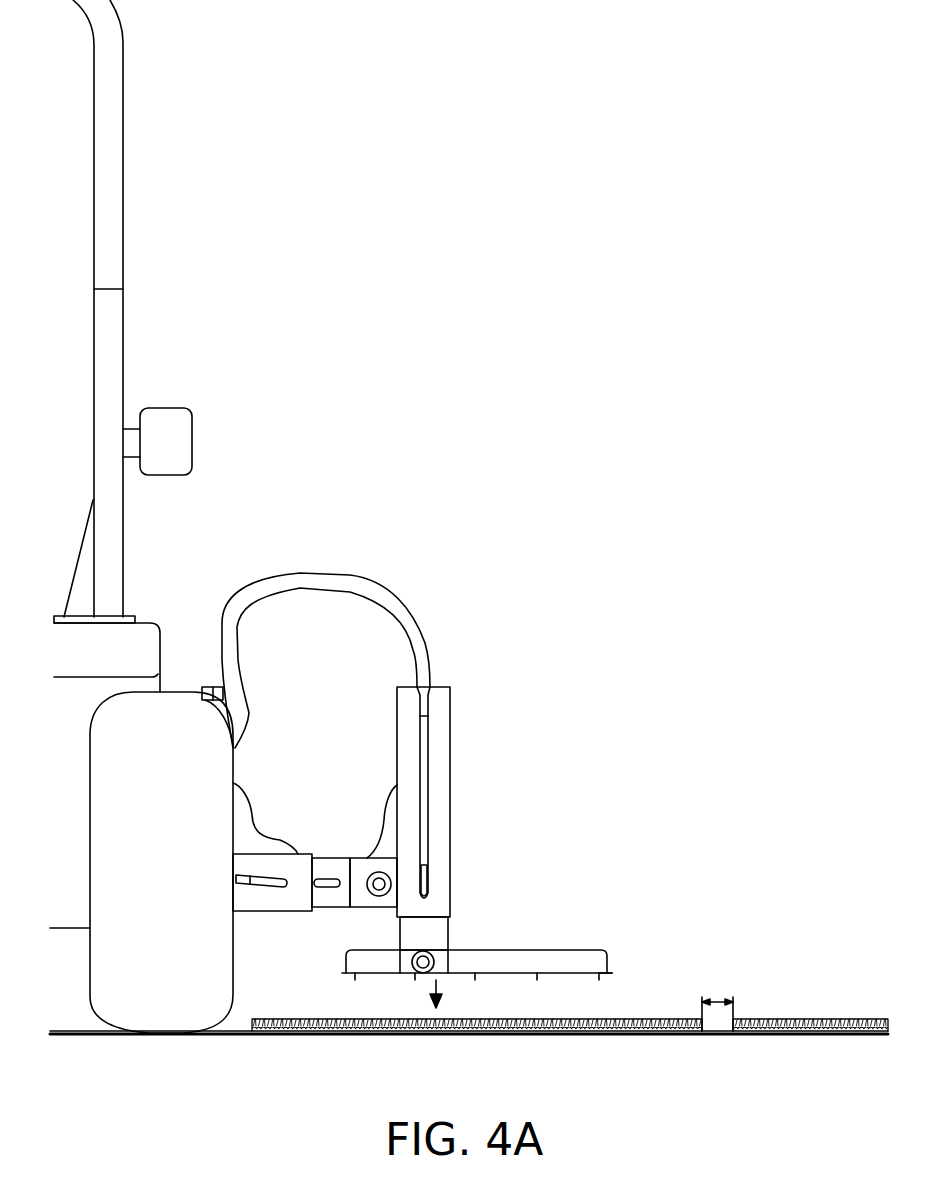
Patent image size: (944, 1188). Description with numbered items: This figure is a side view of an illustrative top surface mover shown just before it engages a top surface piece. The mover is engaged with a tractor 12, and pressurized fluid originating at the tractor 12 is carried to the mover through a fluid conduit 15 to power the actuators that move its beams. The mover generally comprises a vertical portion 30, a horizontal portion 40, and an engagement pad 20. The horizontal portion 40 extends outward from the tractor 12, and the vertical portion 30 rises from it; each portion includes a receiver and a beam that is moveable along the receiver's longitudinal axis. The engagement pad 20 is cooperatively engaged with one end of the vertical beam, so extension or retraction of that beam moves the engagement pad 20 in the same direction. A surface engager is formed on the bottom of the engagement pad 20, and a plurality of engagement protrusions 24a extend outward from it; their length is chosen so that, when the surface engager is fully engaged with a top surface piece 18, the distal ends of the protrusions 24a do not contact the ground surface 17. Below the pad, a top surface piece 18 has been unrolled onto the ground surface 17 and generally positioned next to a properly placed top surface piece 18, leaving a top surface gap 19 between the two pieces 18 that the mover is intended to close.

The tractor 12 is at (148, 621).
The fluid conduit 15 is at (360, 578).
The vertical portion 30 is at (475, 765).
The horizontal portion 40 is at (305, 918).
The engagement pad 20 is at (560, 950).
The engagement protrusions 24a is at (601, 978).
The ground surface 17 is at (238, 1030).
The top surface piece 18 is at (350, 1018).
The top surface gap 19 is at (714, 997).